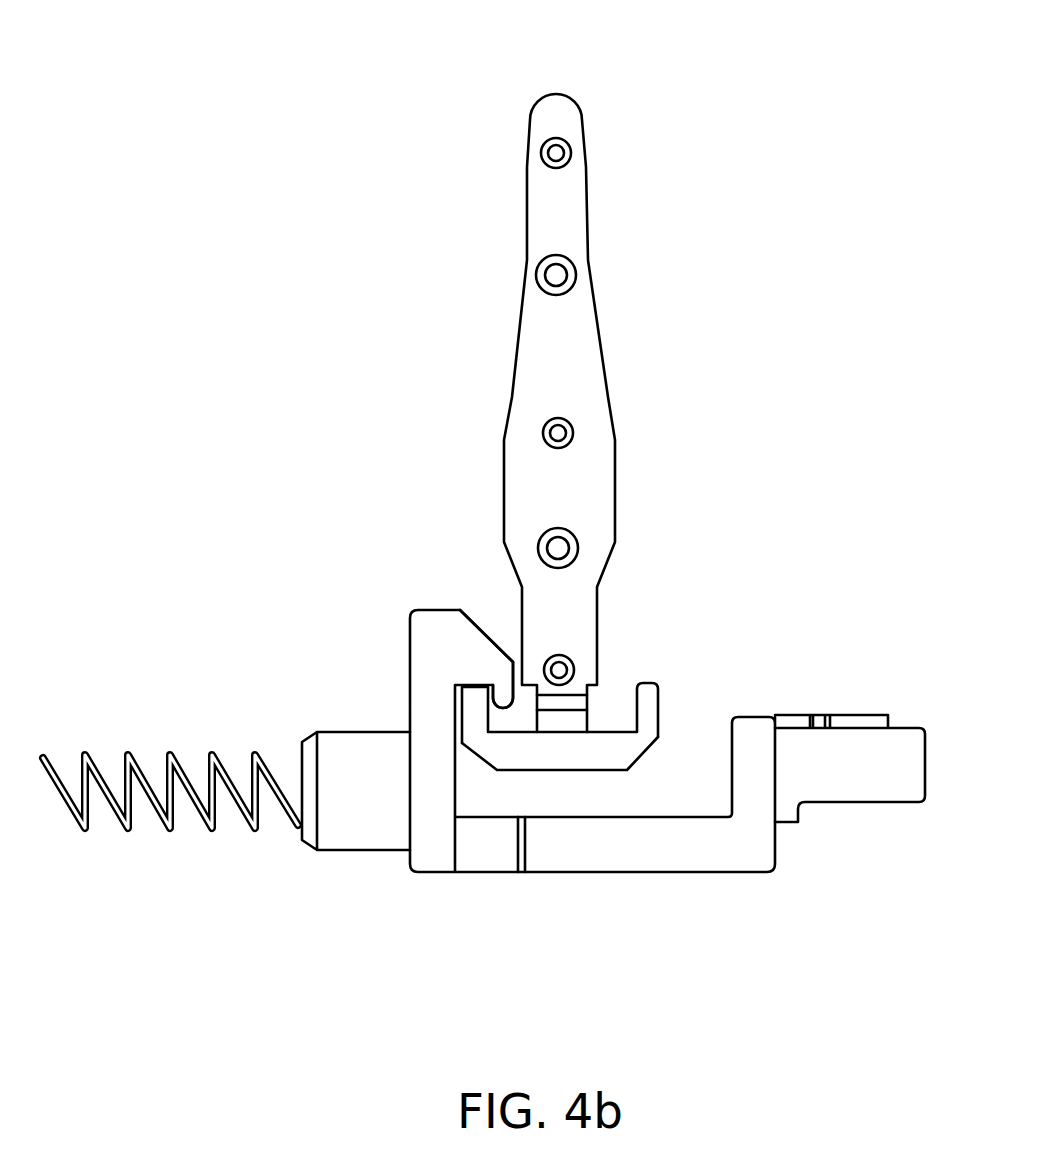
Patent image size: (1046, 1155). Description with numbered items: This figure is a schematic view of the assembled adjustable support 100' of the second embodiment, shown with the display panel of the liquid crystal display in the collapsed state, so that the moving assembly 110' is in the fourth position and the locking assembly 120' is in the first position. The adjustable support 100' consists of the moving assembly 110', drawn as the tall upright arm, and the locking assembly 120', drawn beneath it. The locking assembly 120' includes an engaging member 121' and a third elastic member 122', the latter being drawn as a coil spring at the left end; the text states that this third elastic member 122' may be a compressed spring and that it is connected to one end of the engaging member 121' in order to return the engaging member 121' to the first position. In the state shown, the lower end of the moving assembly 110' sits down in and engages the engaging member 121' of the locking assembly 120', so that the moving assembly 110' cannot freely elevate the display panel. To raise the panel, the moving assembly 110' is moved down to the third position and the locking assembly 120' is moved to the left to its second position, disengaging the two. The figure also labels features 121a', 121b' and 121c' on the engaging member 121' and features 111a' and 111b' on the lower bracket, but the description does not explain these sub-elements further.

The adjustable support 100' is at (501, 485).
The moving assembly 110' is at (478, 413).
The locking assembly 120' is at (501, 706).
The engaging member 121' is at (612, 706).
The third elastic member 122' is at (170, 724).
The slot 121a' is at (420, 673).
The slanted hook portion 121b' is at (425, 601).
The protruding lug 121c' is at (867, 713).
The first engaging wall 111a' is at (560, 823).
The second engaging wall 111b' is at (535, 850).